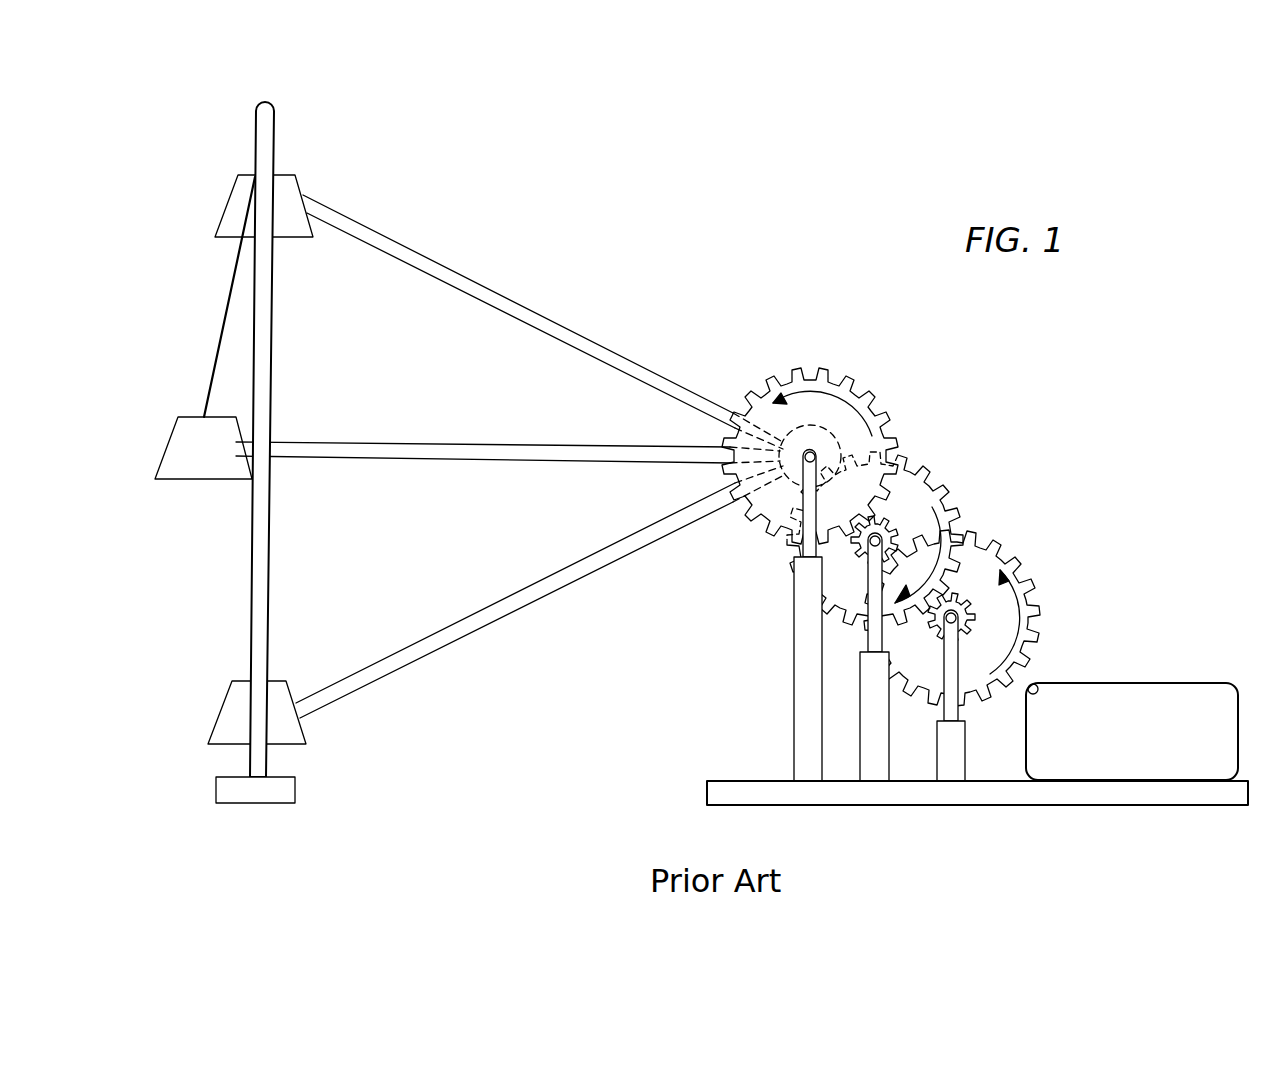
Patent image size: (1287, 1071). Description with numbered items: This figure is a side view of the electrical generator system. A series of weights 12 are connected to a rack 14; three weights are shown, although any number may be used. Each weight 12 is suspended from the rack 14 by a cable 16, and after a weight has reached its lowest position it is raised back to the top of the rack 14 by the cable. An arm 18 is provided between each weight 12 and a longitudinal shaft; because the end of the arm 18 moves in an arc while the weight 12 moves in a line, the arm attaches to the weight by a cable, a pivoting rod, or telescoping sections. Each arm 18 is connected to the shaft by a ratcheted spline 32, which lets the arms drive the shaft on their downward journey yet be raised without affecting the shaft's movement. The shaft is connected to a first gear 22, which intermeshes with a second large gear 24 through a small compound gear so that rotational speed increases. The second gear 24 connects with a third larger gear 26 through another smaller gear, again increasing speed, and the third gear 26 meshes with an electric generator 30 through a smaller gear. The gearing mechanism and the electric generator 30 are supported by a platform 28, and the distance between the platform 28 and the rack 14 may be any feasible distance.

The weights 12 is at (296, 224).
The rack 14 is at (275, 132).
The cable 16 is at (227, 302).
The arm 18 is at (505, 297).
The first gear 22 is at (882, 437).
The second large gear 24 is at (910, 493).
The third larger gear 26 is at (1023, 618).
The platform 28 is at (745, 781).
The electric generator 30 is at (1120, 750).
The ratcheted spline 32 is at (826, 425).